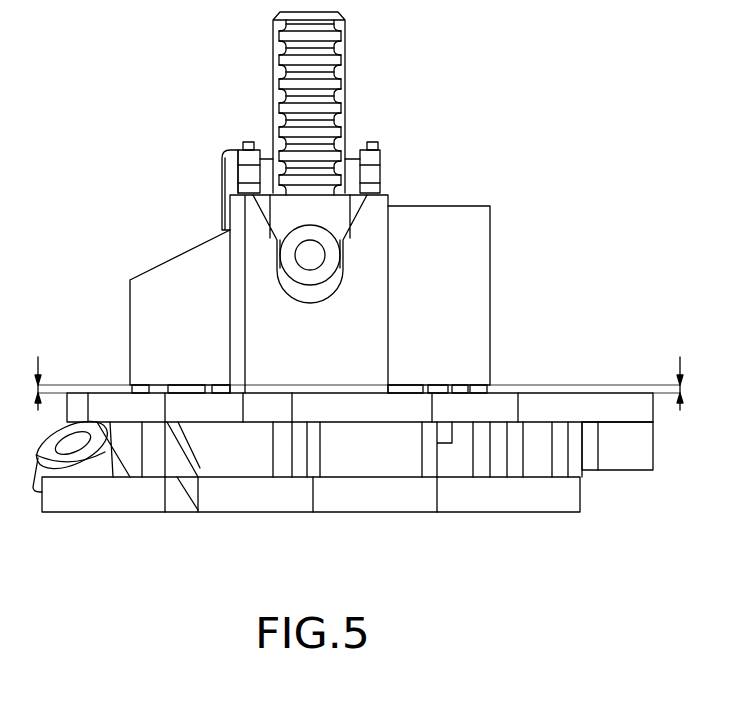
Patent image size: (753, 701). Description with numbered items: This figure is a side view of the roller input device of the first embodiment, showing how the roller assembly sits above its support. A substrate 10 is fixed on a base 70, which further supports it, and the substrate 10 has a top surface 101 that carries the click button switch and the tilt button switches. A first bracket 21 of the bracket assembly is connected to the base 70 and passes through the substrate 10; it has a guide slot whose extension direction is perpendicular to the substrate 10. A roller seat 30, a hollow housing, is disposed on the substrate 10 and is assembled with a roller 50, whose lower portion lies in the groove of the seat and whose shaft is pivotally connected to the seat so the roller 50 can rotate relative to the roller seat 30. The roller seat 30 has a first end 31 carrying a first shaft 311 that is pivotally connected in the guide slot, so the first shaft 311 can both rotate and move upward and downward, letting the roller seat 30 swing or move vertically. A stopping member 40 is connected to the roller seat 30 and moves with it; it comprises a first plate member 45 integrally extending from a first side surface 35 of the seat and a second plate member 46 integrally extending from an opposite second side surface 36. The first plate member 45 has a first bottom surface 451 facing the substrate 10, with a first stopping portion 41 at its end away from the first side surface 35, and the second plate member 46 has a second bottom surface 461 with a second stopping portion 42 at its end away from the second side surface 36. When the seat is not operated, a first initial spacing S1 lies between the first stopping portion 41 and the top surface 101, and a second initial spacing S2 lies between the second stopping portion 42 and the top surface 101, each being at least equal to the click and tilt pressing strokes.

The roller 50 is at (345, 60).
The roller seat 30 is at (378, 156).
The first side surface 35 is at (380, 186).
The second side surface 36 is at (220, 176).
The first end 31 is at (300, 206).
The first shaft 311 is at (317, 273).
The stopping member 40 is at (309, 295).
The first plate member 45 is at (478, 268).
The second plate member 46 is at (157, 293).
The first bracket 21 is at (287, 382).
The substrate 10 is at (403, 410).
The top surface 101 is at (548, 396).
The first stopping portion 41 is at (485, 387).
The first bottom surface 451 is at (422, 402).
The second bottom surface 461 is at (207, 402).
The second stopping portion 42 is at (130, 398).
The base 70 is at (625, 457).
The first initial spacing S1 is at (474, 383).
The second initial spacing S2 is at (67, 383).